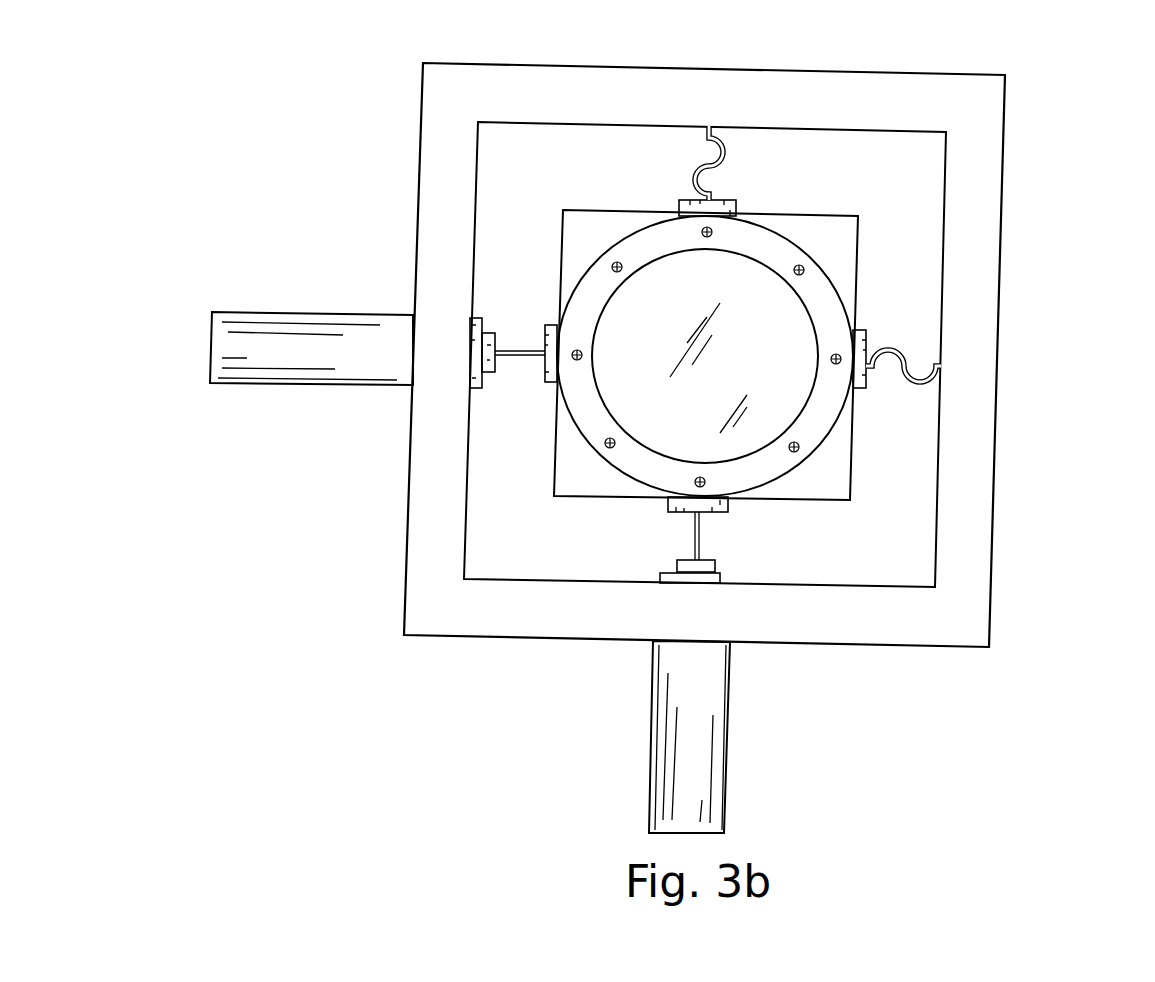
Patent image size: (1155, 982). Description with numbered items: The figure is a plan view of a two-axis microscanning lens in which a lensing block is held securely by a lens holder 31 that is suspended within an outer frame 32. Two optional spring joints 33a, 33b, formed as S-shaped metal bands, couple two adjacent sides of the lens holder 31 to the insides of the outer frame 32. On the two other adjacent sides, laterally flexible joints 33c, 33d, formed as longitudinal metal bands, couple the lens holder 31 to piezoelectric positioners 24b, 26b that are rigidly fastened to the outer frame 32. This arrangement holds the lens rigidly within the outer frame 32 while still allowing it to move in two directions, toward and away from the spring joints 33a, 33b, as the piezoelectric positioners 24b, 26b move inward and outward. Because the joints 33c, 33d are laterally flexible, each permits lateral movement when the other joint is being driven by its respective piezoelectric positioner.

The piezoelectric positioner 24b is at (258, 310).
The piezoelectric positioner 26b is at (728, 735).
The lens holder 31 is at (854, 465).
The outer frame 32 is at (993, 605).
The spring joint 33a is at (727, 152).
The spring joint 33b is at (905, 348).
The laterally flexible joint 33c is at (707, 540).
The laterally flexible joint 33d is at (510, 380).